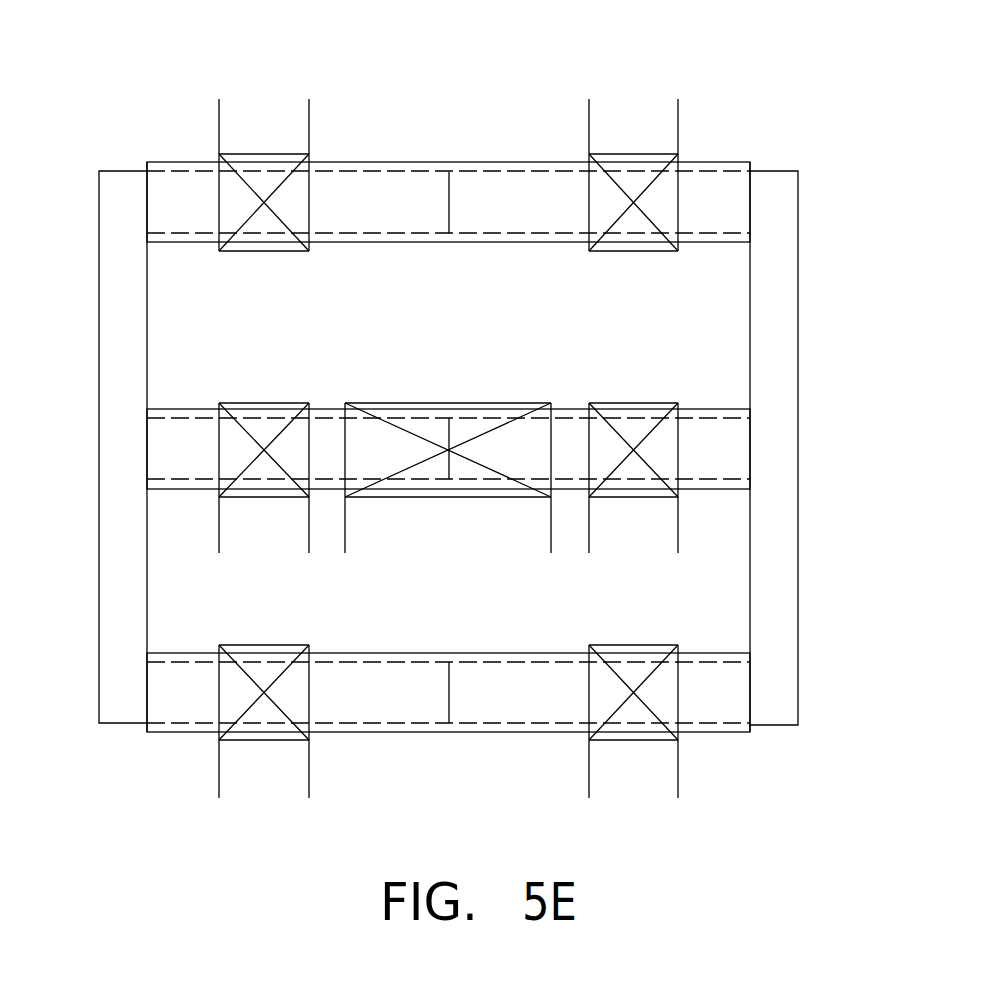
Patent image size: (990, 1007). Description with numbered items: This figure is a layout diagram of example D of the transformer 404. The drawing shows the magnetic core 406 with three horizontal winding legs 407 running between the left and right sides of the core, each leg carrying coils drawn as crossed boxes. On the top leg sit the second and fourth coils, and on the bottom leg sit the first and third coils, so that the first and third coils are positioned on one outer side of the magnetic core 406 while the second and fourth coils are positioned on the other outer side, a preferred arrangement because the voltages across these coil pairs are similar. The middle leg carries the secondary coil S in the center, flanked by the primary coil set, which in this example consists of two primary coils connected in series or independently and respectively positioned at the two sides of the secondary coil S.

The transformer 404 is at (968, 63).
The magnetic core 406 is at (798, 323).
The metal rail / interconnect line 407 is at (742, 165).
The secondary coil S is at (448, 498).